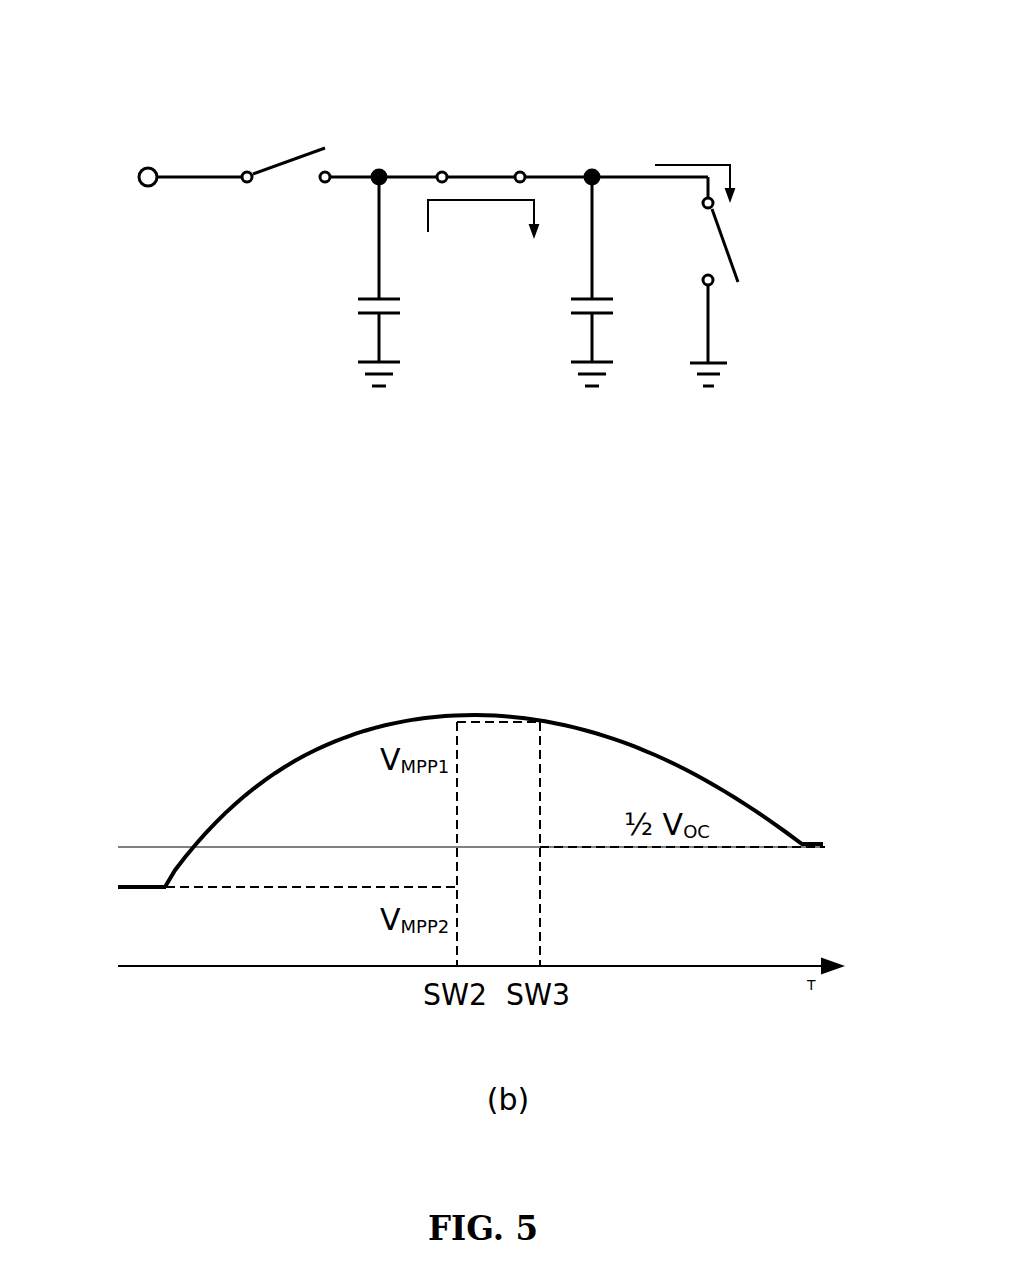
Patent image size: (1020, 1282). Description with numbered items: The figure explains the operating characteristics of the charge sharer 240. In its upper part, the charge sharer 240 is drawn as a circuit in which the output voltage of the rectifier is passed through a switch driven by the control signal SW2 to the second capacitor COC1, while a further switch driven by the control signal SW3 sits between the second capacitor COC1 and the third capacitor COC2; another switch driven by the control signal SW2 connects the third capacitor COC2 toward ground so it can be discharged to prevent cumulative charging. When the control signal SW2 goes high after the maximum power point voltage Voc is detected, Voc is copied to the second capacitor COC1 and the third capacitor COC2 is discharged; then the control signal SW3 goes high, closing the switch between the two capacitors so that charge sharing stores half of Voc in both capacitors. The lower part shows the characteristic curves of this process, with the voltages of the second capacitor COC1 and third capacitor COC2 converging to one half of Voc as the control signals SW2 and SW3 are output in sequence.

The charge sharer 240 is at (862, 34).
The control signal SW2 is at (293, 130).
The control signal SW3 is at (484, 153).
The second capacitor COC1 is at (413, 285).
The third capacitor COC2 is at (626, 285).